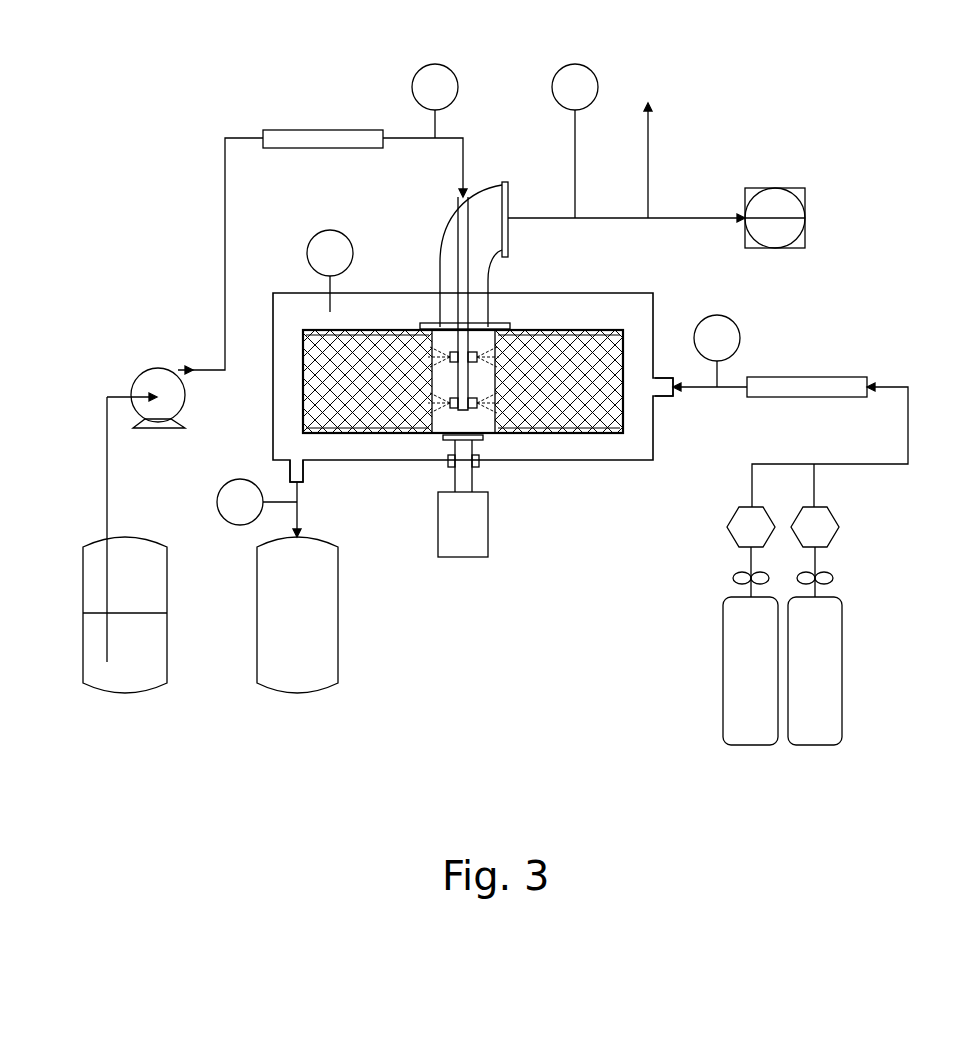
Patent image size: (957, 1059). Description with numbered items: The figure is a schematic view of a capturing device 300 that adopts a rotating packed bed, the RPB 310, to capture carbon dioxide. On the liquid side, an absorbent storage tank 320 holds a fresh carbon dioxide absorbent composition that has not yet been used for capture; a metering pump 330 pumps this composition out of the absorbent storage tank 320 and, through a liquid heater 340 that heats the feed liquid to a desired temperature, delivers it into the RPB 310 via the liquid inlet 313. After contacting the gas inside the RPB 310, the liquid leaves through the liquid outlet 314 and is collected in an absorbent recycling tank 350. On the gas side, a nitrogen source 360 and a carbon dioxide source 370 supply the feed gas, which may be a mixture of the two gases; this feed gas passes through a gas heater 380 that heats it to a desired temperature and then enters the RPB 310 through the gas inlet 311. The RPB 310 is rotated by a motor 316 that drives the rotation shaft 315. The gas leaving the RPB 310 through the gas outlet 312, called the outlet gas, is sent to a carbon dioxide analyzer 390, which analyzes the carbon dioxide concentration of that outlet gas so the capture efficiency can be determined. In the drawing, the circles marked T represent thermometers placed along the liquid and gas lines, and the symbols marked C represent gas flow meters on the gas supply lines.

The capturing device 300 is at (84, 52).
The RPB 310 is at (605, 462).
The gas inlet 311 is at (677, 396).
The gas outlet 312 is at (517, 190).
The liquid inlet 313 is at (458, 193).
The liquid outlet 314 is at (303, 483).
The rotation shaft 315 is at (473, 477).
The motor 316 is at (463, 558).
The absorbent storage tank 320 is at (125, 695).
The metering pump 330 is at (142, 377).
The liquid heater 340 is at (312, 132).
The absorbent recycling tank 350 is at (317, 695).
The N2 source 360 is at (745, 749).
The CO2 source 370 is at (813, 749).
The gas heater 380 is at (838, 377).
The CO2 analyzer 390 is at (773, 188).